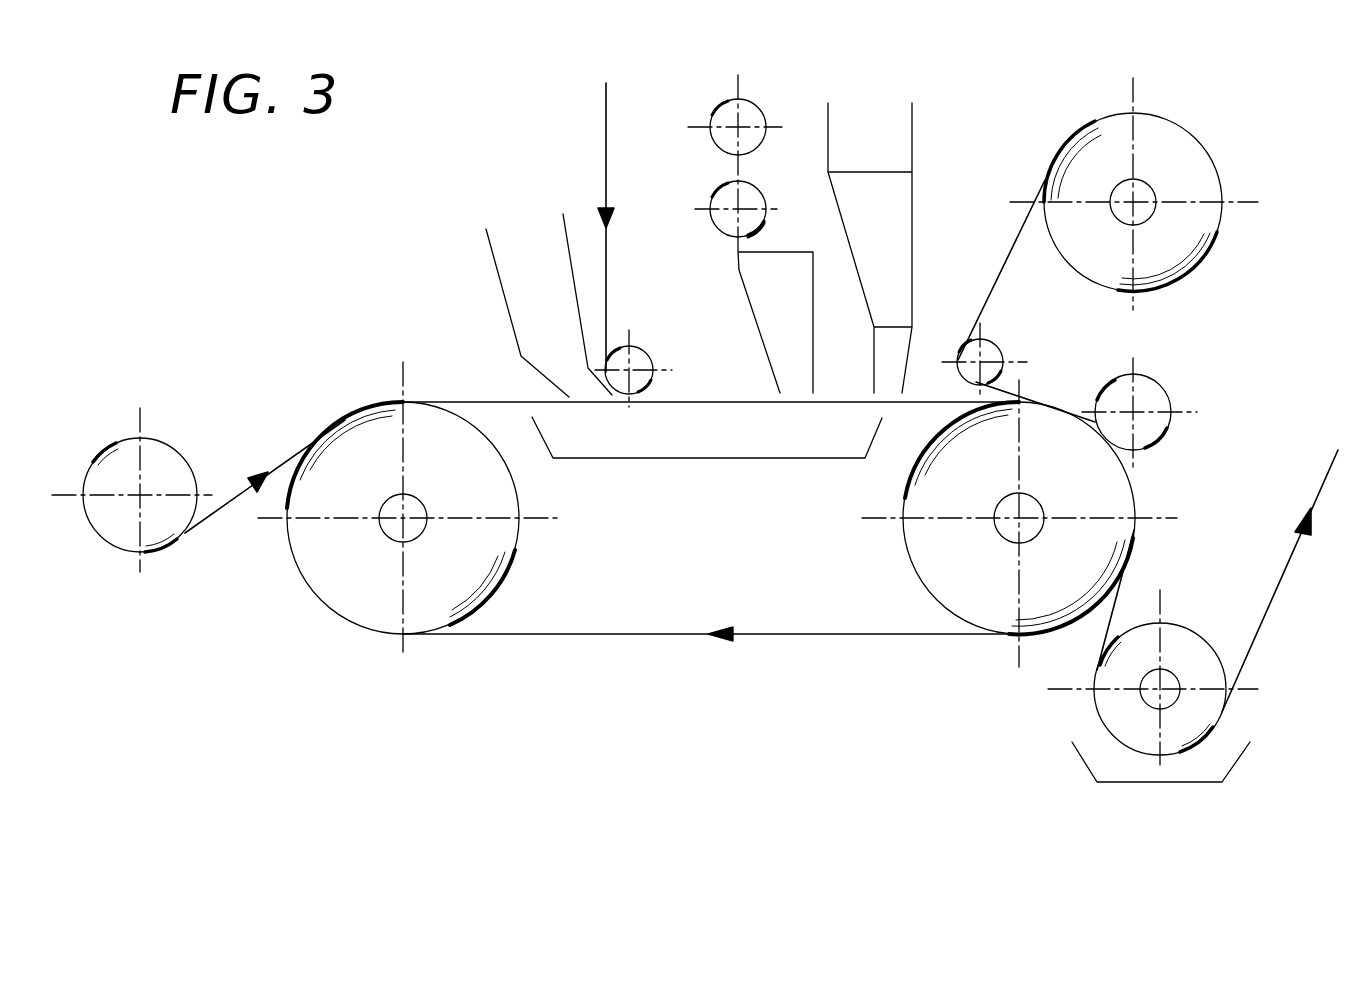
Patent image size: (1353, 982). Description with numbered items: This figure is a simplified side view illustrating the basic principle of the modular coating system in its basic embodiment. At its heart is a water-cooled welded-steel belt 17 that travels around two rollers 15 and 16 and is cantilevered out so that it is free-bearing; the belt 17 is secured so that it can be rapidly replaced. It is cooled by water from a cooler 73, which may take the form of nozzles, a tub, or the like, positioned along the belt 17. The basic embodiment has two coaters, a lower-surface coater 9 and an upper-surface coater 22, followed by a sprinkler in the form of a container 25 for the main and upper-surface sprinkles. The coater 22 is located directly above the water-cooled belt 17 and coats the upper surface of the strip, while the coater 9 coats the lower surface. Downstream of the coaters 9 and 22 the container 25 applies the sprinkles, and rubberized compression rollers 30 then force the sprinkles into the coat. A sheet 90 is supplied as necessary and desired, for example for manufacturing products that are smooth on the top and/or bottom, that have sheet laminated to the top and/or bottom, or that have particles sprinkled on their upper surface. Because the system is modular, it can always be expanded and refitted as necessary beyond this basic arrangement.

The lower-surface coater 9 is at (785, 263).
The roller 15 is at (340, 595).
The roller 16 is at (1042, 423).
The water-cooled welded-steel belt 17 is at (547, 637).
The coater 22 is at (532, 267).
The container 25 is at (887, 133).
The rubberized compression rollers 30 is at (1160, 403).
The cooler 73 is at (708, 460).
The sheet 90 is at (213, 507).